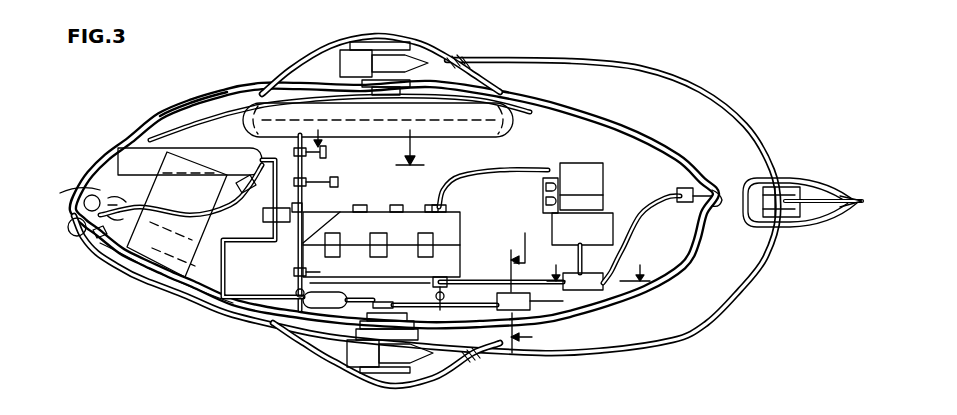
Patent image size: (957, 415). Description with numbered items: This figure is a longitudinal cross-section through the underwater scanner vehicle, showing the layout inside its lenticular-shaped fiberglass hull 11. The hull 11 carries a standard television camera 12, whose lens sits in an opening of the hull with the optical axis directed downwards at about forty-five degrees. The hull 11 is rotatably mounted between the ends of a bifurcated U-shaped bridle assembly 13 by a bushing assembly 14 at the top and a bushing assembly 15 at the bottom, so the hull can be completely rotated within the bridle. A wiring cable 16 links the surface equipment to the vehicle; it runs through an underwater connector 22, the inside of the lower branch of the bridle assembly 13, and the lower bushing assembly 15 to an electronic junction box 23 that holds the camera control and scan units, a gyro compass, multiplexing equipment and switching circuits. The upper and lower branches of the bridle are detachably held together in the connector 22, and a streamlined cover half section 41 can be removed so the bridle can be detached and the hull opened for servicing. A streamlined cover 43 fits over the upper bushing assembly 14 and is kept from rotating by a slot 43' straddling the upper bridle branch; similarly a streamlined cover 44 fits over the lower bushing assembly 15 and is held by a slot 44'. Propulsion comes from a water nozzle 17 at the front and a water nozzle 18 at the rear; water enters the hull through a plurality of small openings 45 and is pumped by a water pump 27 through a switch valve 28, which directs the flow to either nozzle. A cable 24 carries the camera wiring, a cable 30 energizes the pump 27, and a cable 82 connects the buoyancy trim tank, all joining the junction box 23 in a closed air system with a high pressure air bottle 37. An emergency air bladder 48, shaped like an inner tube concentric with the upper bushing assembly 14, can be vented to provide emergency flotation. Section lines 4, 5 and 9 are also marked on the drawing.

The section line 4- 4 is at (598, 263).
The section line 5- 5 is at (529, 283).
The section line 9- 9 is at (367, 137).
The hull 11 is at (658, 148).
The television camera 12 is at (180, 156).
The bridle assembly 13 is at (618, 61).
The bushing assembly 14 is at (372, 43).
The bushing assembly 15 is at (388, 371).
The wiring cable 16 is at (855, 208).
The water nozzle 17 is at (62, 197).
The water nozzle 18 is at (721, 203).
The underwater connector 22 is at (788, 228).
The electronic junction box 23 is at (463, 232).
The cable 24 is at (226, 186).
The water pump 27 is at (594, 164).
The switch valve 28 is at (595, 292).
The cable 30 is at (468, 173).
The high pressure air bottle 37 is at (132, 144).
The cover half section 41 is at (799, 178).
The streamlined cover 43 is at (381, 58).
The slot 43' is at (466, 45).
The streamlined cover 44 is at (386, 354).
The slot 44' is at (487, 368).
The small openings 45 is at (212, 100).
The emergency air bladder 48 is at (499, 134).
The cable 82 is at (317, 222).